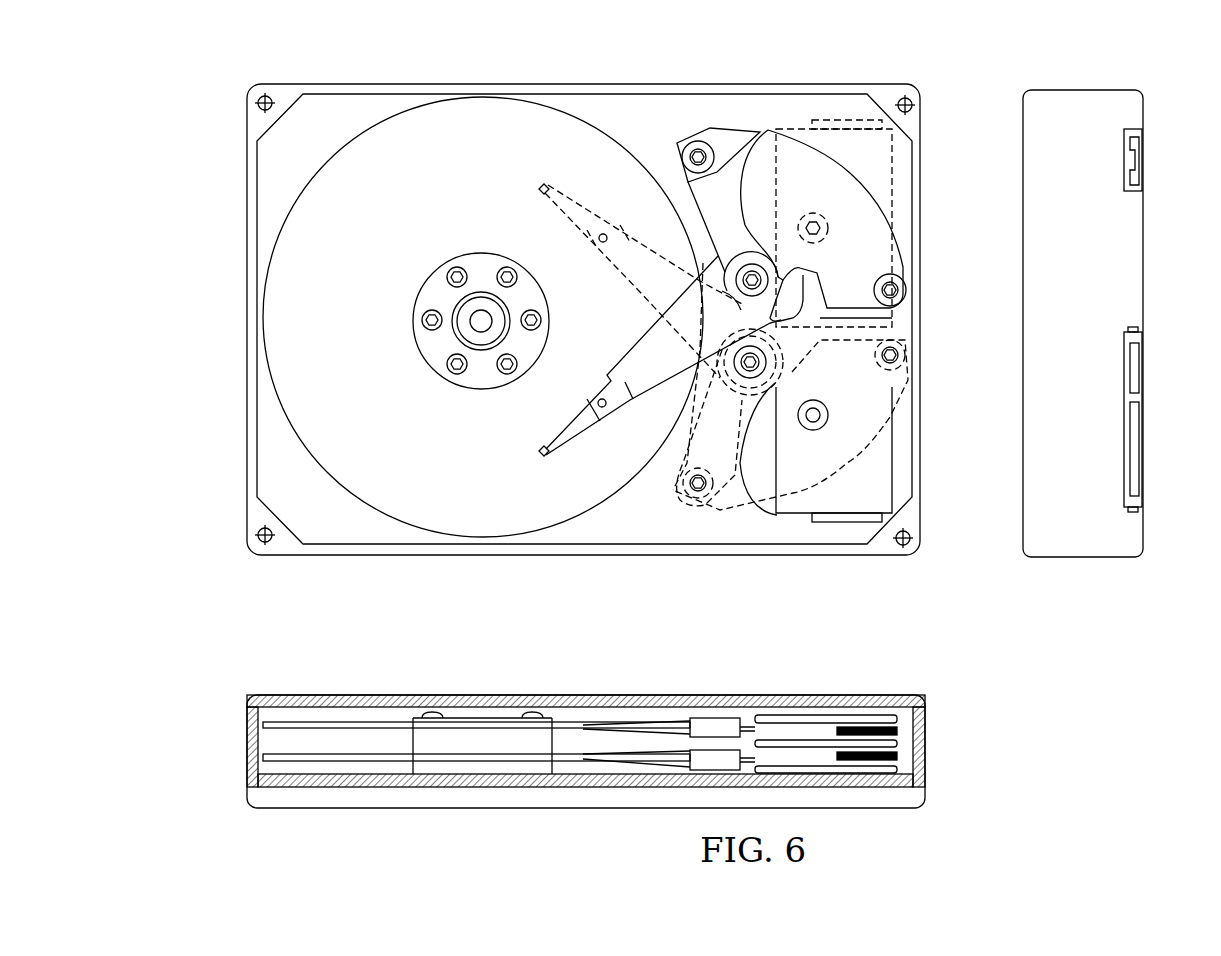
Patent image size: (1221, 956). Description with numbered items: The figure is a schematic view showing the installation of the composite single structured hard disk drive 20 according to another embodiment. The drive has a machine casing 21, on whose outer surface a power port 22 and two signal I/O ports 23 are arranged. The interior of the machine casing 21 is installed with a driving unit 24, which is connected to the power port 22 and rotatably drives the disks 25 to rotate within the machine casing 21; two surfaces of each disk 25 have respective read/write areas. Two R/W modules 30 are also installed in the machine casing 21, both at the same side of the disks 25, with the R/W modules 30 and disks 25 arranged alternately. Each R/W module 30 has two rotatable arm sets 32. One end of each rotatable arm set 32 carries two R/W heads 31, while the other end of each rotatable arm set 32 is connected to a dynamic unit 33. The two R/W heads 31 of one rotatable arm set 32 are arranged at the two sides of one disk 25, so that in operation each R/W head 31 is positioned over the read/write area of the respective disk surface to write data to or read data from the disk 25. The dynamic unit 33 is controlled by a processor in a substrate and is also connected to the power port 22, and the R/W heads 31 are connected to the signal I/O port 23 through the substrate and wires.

The hard disk drive 20 is at (244, 400).
The machine casing 21 is at (318, 108).
The power port 22 is at (1136, 458).
The signal I/O port 23 is at (1136, 154).
The driving unit 24 is at (443, 300).
The disk 25 is at (298, 278).
The R/W module 30 is at (840, 158).
The R/W head 31 is at (578, 210).
The rotatable arm set 32 is at (647, 270).
The dynamic unit 33 is at (857, 213).